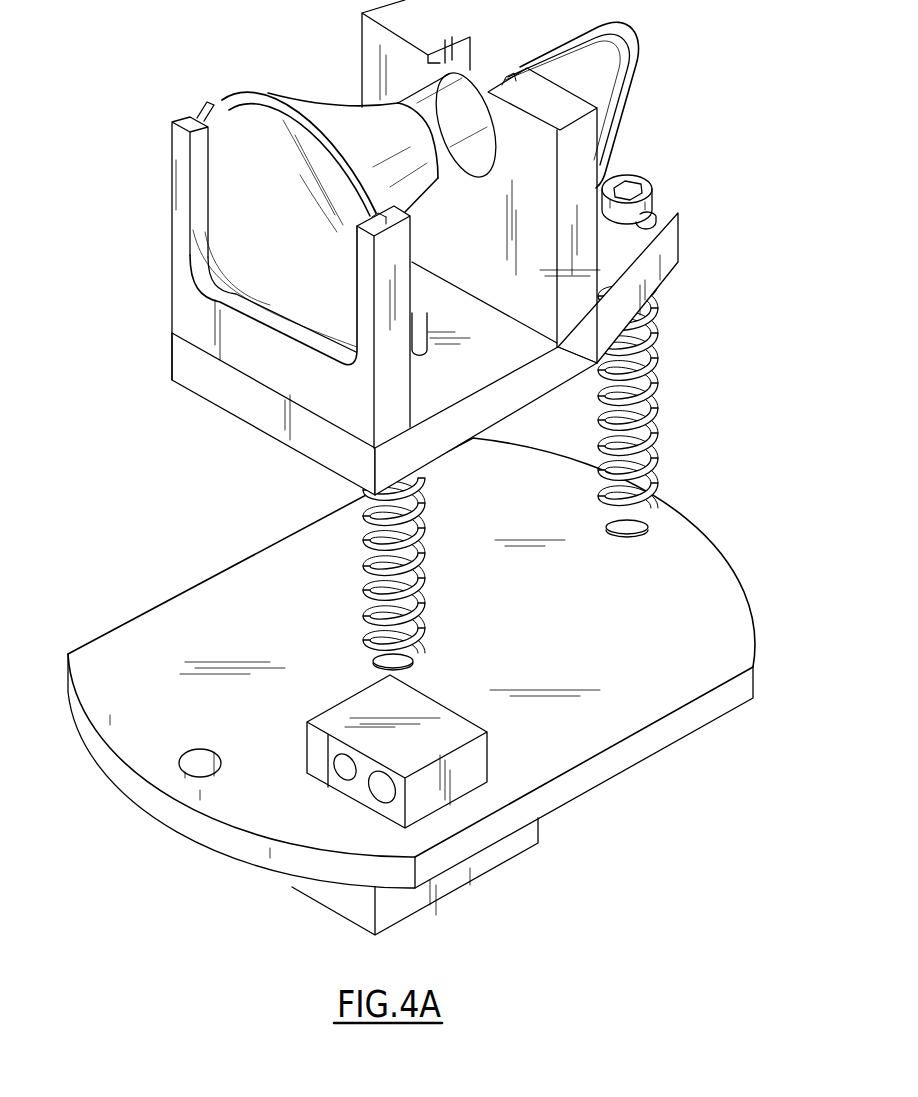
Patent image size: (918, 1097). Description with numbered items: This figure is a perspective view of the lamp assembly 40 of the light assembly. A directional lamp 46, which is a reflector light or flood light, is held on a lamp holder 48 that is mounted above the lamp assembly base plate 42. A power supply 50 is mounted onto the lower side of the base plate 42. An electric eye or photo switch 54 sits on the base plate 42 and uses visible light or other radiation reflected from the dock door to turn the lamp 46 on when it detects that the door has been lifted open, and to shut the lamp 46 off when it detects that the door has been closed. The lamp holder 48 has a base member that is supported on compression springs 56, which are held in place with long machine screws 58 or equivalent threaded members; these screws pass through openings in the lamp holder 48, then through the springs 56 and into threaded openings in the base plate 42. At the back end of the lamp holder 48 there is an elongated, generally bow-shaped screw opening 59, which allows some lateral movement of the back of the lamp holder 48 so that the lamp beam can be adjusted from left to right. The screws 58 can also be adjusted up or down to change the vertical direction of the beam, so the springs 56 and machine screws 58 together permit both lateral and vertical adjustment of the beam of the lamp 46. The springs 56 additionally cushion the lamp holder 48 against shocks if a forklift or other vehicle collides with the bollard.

The lens mount assembly 40 is at (812, 192).
The base plate 42 is at (115, 717).
The directional lamp 46 is at (307, 97).
The lamp holder 48 is at (239, 418).
The power supply 50 is at (472, 873).
The electric eye or photo switch 54 is at (437, 700).
The compression springs 56 is at (423, 523).
The machine screws 58 is at (651, 183).
The bow-shaped screw opening 59 is at (653, 227).